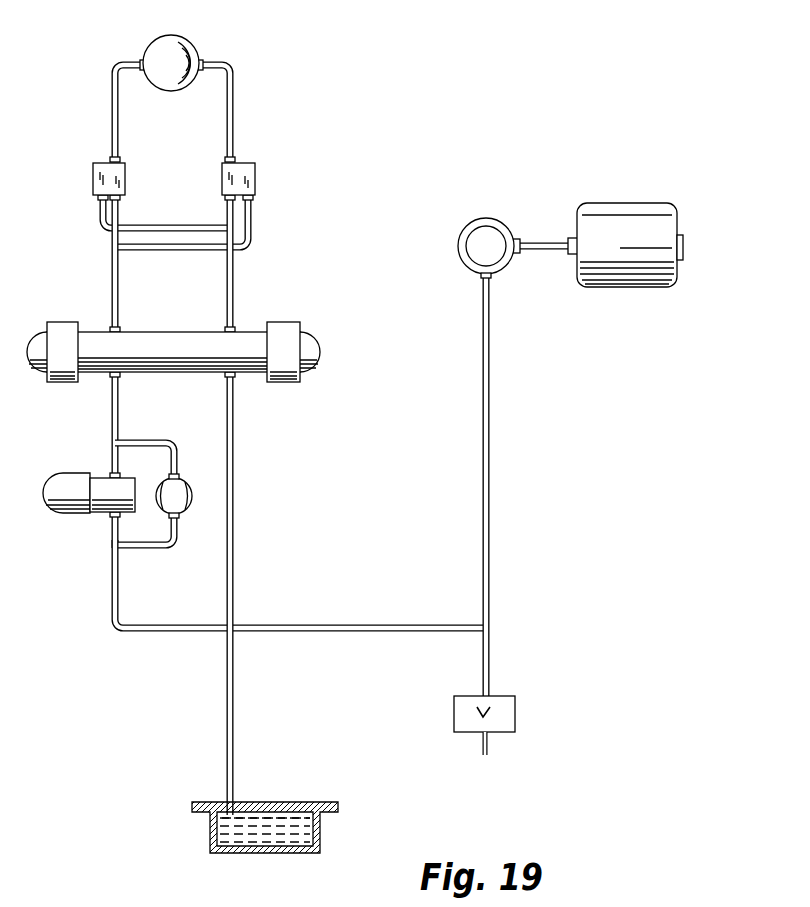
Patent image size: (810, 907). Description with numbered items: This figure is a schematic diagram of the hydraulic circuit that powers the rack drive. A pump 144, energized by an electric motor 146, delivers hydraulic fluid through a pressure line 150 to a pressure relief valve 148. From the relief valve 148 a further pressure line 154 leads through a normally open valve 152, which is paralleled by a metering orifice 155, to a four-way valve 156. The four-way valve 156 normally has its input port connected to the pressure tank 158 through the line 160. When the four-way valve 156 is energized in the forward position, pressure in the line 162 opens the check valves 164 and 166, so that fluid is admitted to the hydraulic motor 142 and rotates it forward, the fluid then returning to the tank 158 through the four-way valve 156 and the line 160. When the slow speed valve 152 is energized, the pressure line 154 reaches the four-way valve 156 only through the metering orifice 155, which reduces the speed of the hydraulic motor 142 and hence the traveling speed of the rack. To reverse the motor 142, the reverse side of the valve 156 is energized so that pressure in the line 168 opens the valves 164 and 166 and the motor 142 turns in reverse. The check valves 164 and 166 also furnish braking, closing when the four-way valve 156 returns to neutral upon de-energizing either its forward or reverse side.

The hydraulic motor 142 is at (168, 45).
The pump 144 is at (490, 232).
The electric motor 146 is at (620, 212).
The pressure relief valve 148 is at (503, 705).
The pressure line 150 is at (490, 457).
The normally open valve 152 is at (100, 512).
The pressure line 154 is at (335, 627).
The metering orifice 155 is at (175, 487).
The four-way valve 156 is at (152, 338).
The pressure tank 158 is at (230, 830).
The line 160 is at (233, 718).
The line 162 is at (113, 282).
The check valve 164 is at (97, 170).
The check valve 166 is at (240, 177).
The line 168 is at (235, 280).